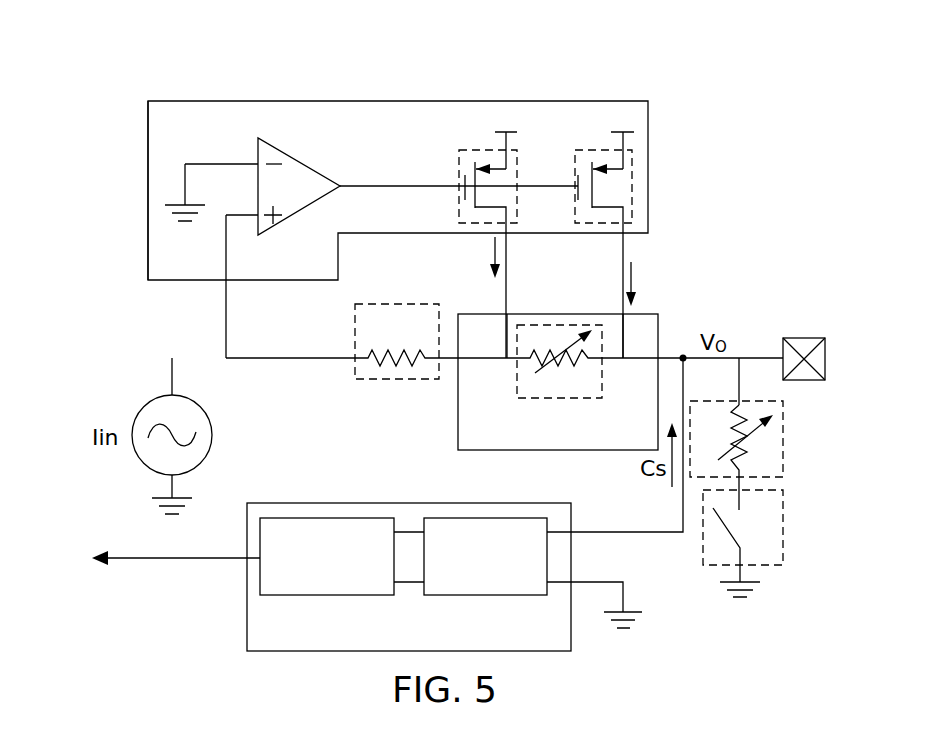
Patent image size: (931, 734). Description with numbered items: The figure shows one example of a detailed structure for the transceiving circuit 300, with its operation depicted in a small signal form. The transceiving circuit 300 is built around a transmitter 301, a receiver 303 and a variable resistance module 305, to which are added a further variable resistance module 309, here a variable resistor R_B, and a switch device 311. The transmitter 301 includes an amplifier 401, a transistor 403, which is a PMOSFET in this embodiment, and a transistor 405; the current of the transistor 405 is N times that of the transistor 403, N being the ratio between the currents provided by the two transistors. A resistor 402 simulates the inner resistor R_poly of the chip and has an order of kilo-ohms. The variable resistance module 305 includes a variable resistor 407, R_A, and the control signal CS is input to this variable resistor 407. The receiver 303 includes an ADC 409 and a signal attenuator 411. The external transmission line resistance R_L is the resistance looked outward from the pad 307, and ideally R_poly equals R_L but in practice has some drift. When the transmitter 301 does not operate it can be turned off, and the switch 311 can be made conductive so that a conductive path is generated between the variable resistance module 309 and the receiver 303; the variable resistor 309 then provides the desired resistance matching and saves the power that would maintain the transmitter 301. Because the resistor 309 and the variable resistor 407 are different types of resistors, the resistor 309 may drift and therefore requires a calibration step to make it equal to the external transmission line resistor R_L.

The transceiving circuit 300 is at (160, 88).
The transmitter 301 is at (648, 166).
The receiver 303 is at (284, 503).
The variable resistance module 305 is at (658, 320).
The pad 307 is at (803, 336).
The variable resistance module 309 is at (782, 440).
The switch device 311 is at (783, 535).
The amplifier 401 is at (297, 211).
The resistor 402 is at (401, 303).
The transistor 403 is at (517, 172).
The transistor 405 is at (603, 224).
The variable resistor 407 is at (547, 323).
The ADC 409 is at (326, 518).
The signal attenuator 411 is at (484, 518).